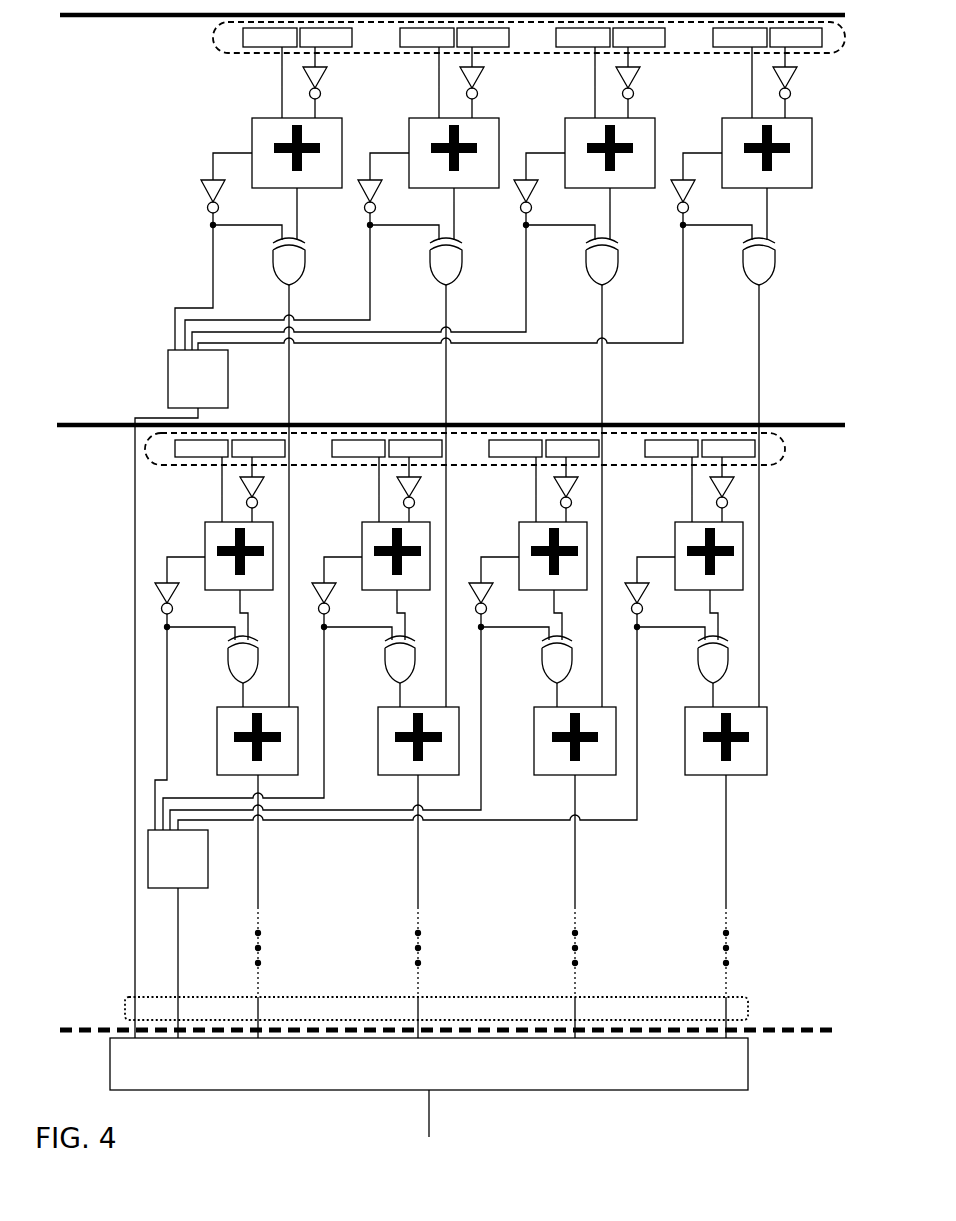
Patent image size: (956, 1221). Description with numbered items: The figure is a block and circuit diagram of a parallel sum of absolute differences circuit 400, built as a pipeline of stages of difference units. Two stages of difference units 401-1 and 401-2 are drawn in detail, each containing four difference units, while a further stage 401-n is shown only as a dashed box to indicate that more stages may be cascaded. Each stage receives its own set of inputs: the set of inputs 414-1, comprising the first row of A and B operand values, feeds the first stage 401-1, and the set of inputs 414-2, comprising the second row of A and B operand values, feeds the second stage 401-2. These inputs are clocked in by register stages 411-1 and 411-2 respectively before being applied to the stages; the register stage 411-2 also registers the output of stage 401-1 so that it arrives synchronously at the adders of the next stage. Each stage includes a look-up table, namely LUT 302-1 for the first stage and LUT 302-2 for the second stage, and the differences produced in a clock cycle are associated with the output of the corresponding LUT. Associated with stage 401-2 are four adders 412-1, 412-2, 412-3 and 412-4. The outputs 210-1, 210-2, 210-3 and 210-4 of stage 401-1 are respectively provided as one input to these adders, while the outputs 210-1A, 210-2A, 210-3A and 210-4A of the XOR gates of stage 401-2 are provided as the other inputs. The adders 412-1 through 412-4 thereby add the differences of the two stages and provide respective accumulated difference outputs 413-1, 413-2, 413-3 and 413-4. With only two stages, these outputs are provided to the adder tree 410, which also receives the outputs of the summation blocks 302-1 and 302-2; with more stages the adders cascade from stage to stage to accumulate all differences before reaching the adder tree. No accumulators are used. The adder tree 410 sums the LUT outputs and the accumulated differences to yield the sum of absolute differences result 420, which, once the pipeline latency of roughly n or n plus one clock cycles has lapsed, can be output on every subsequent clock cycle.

The parallel sum of absolute differences circuit 400 is at (436, 578).
The first stage of difference units 401-1 is at (132, 30).
The second stage of difference units 401-2 is at (117, 440).
The nth stage 401-n is at (110, 994).
The register stage 411-1 is at (73, 18).
The register stage 411-2 is at (60, 428).
The set of inputs 414-1 is at (230, 54).
The set of inputs 414-2 is at (160, 466).
The LUT 302-1 is at (179, 389).
The LUT 302-2 is at (159, 869).
The output of stage 401-1 210-1 is at (291, 382).
The output of stage 401-1 210-2 is at (476, 496).
The output of stage 401-1 210-3 is at (632, 496).
The output of stage 401-1 210-4 is at (789, 496).
The XOR gate output of stage 401-2 210-1A is at (243, 697).
The XOR gate output of stage 401-2 210-2A is at (368, 695).
The XOR gate output of stage 401-2 210-3A is at (525, 695).
The XOR gate output of stage 401-2 210-4A is at (681, 695).
The adder 412-1 is at (217, 747).
The adder 412-2 is at (378, 747).
The adder 412-3 is at (534, 747).
The adder 412-4 is at (685, 747).
The accumulated difference output 413-1 is at (260, 865).
The accumulated difference output 413-2 is at (420, 865).
The accumulated difference output 413-3 is at (577, 865).
The accumulated difference output 413-4 is at (728, 865).
The adder tree 410 is at (415, 1087).
The sum of absolute differences result 420 is at (429, 1110).